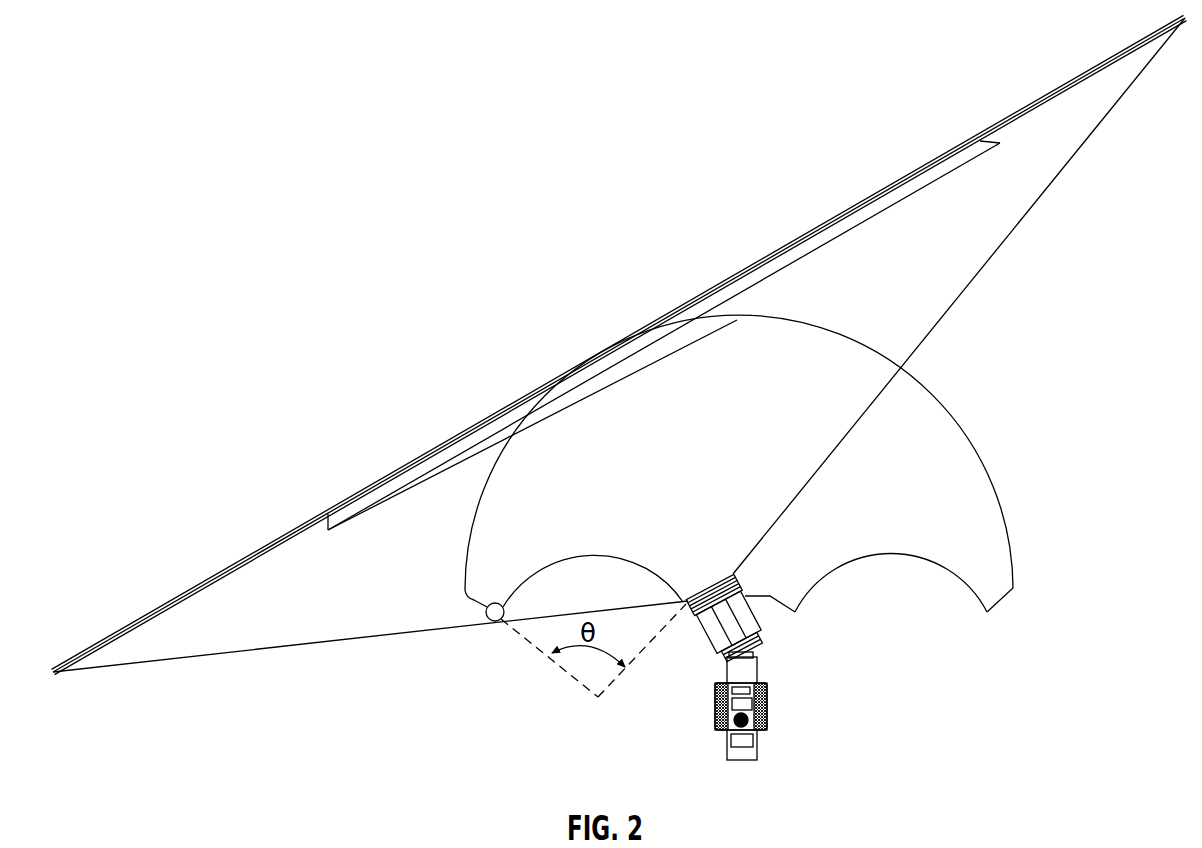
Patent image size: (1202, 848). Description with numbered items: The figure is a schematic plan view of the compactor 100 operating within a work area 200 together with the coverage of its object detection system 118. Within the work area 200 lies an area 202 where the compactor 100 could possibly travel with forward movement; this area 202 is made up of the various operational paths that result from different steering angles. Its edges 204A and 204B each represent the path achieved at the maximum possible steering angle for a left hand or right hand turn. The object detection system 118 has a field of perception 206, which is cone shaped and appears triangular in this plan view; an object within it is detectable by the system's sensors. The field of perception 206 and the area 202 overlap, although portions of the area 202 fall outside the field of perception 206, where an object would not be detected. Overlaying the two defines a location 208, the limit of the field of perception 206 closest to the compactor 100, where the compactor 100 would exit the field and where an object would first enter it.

The compactor 100 is at (720, 745).
The object detection system 118 is at (688, 625).
The work area 200 is at (1075, 348).
The area 202 is at (993, 462).
The edge 204A is at (573, 555).
The edge 204B is at (915, 557).
The field of perception 206 is at (886, 181).
The location 208 is at (494, 623).